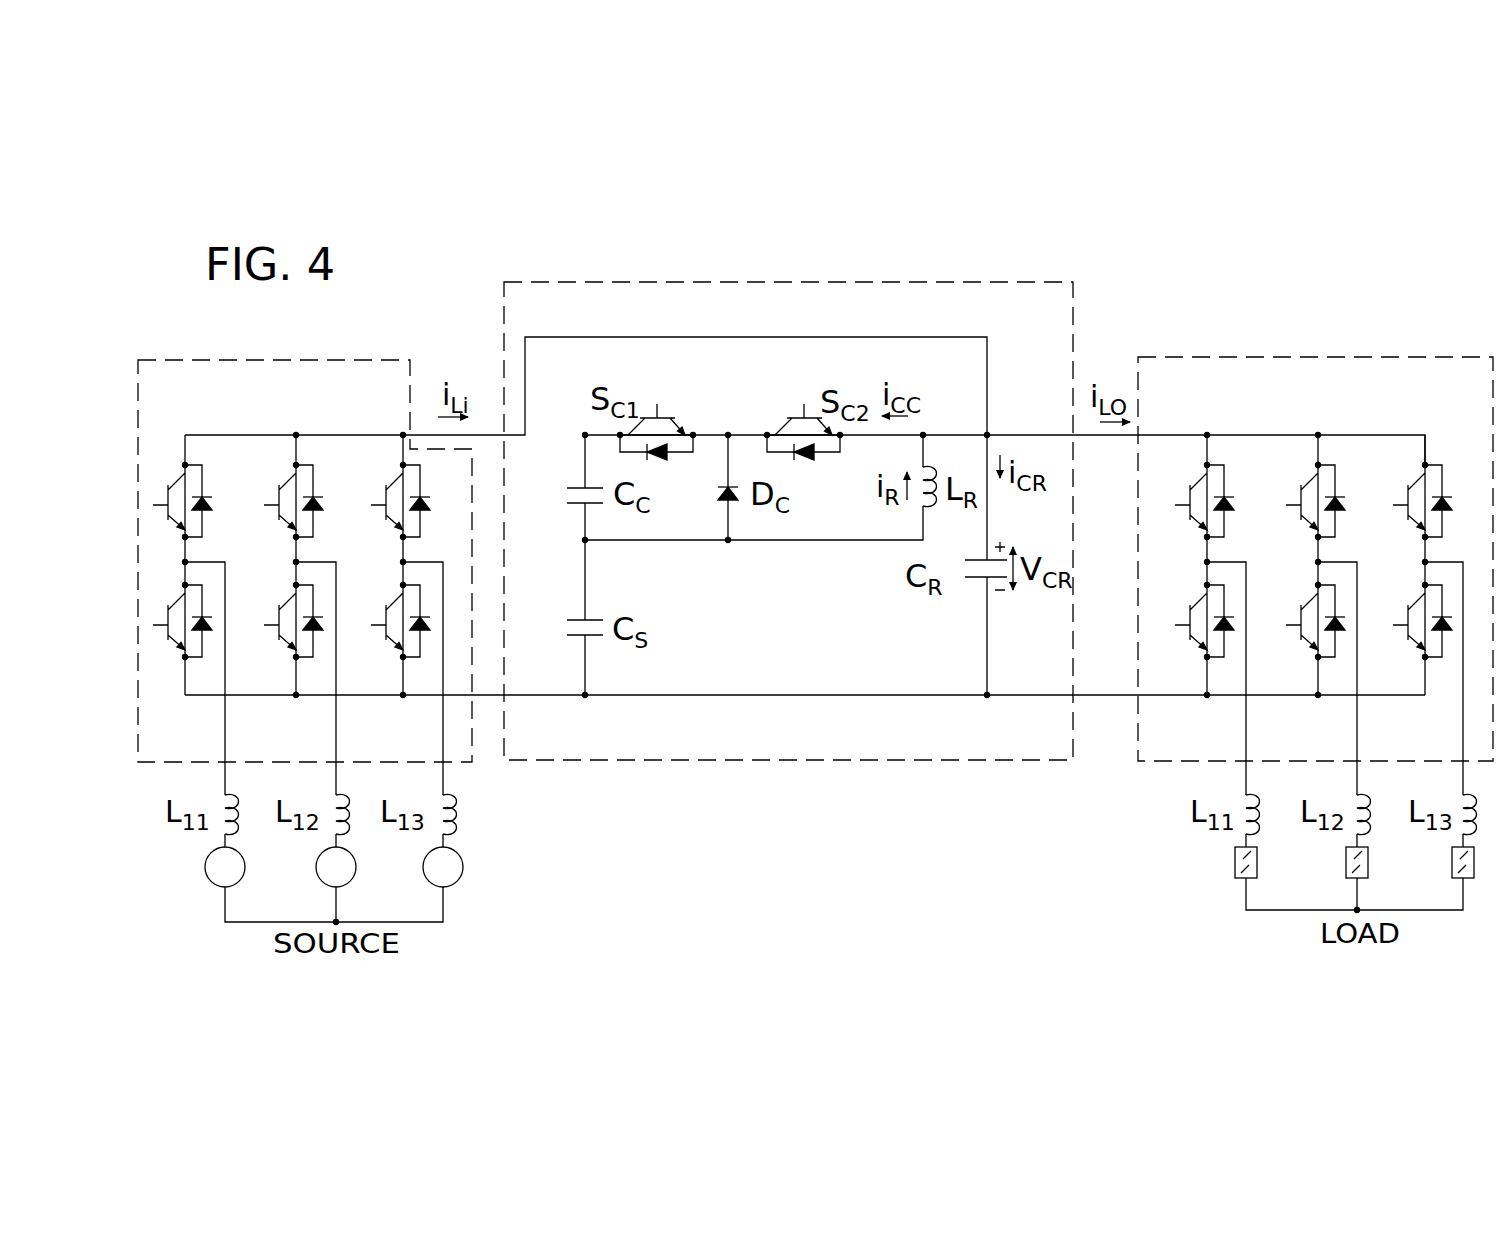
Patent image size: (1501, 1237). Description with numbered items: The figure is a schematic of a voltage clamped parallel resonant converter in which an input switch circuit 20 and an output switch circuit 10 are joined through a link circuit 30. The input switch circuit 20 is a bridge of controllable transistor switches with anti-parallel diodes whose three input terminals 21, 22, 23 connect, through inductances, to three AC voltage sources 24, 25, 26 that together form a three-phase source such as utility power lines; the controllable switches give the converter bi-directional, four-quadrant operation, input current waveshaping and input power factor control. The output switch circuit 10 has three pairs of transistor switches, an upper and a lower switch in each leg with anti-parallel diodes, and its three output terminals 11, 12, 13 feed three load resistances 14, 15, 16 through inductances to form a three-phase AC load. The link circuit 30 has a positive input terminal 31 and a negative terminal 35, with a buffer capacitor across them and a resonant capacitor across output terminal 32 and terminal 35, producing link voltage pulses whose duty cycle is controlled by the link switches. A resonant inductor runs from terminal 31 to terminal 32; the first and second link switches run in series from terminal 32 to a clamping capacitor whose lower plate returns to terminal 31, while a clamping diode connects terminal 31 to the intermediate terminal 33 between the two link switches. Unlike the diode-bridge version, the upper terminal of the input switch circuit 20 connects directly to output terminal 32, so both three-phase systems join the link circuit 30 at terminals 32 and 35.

The output switch circuit 10 is at (1315, 538).
The output terminal 11 is at (1207, 562).
The output terminal 12 is at (1318, 562).
The output terminal 13 is at (1425, 562).
The load resistance 14 is at (1235, 862).
The load resistance 15 is at (1346, 862).
The load resistance 16 is at (1452, 862).
The input switch circuit 20 is at (305, 540).
The input terminal 21 is at (185, 585).
The input terminal 22 is at (296, 585).
The input terminal 23 is at (403, 585).
The AC voltage source 24 is at (206, 860).
The AC voltage source 25 is at (317, 860).
The AC voltage source 26 is at (424, 860).
The link circuit 30 is at (788, 501).
The positive voltage input terminal 31 is at (586, 543).
The output terminal 32 is at (989, 433).
The intermediate terminal 33 is at (730, 420).
The negative voltage input terminal 35 is at (586, 698).